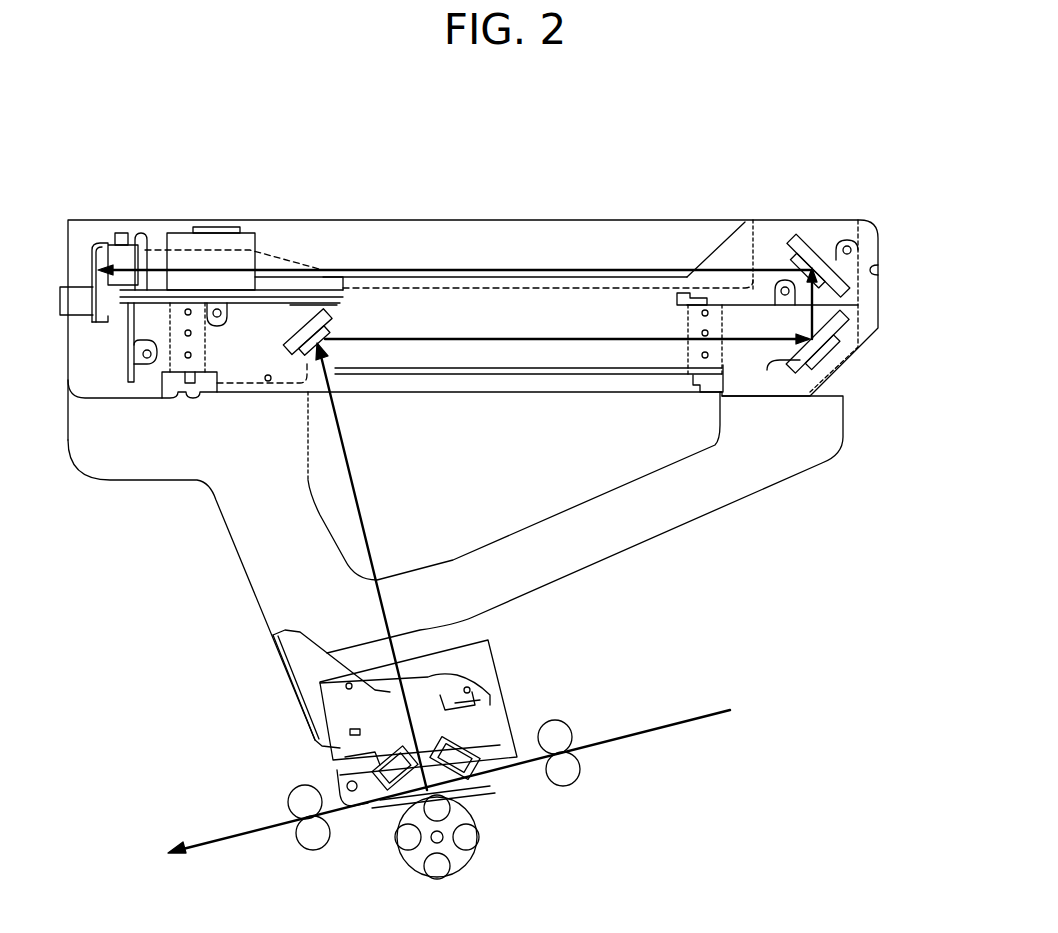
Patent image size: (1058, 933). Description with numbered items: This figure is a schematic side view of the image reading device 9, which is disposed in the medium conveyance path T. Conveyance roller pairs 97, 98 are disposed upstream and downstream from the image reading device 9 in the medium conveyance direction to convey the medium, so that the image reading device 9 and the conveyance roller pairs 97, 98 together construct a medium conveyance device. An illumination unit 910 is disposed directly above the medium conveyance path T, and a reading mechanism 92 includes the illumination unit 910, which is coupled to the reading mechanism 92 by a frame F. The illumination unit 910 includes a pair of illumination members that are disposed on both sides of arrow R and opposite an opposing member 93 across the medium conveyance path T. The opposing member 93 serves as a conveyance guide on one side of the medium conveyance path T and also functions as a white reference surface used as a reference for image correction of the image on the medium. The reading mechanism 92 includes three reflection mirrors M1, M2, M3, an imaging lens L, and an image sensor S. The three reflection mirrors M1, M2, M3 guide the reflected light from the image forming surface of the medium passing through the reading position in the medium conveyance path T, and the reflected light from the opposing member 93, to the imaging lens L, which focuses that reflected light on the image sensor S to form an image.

The image reading device 9 is at (887, 891).
The reading mechanism 92 is at (183, 200).
The image sensor S is at (110, 263).
The imaging lens L is at (254, 251).
The reflection mirror M1 is at (310, 388).
The reflection mirror M2 is at (783, 350).
The reflection mirror M3 is at (788, 256).
The arrow R is at (353, 479).
The frame F is at (238, 563).
The illumination unit 910 is at (294, 760).
The conveyance roller pair 97 is at (556, 730).
The conveyance roller pair 98 is at (300, 802).
The opposing member 93 is at (489, 836).
The medium conveyance path T is at (207, 838).